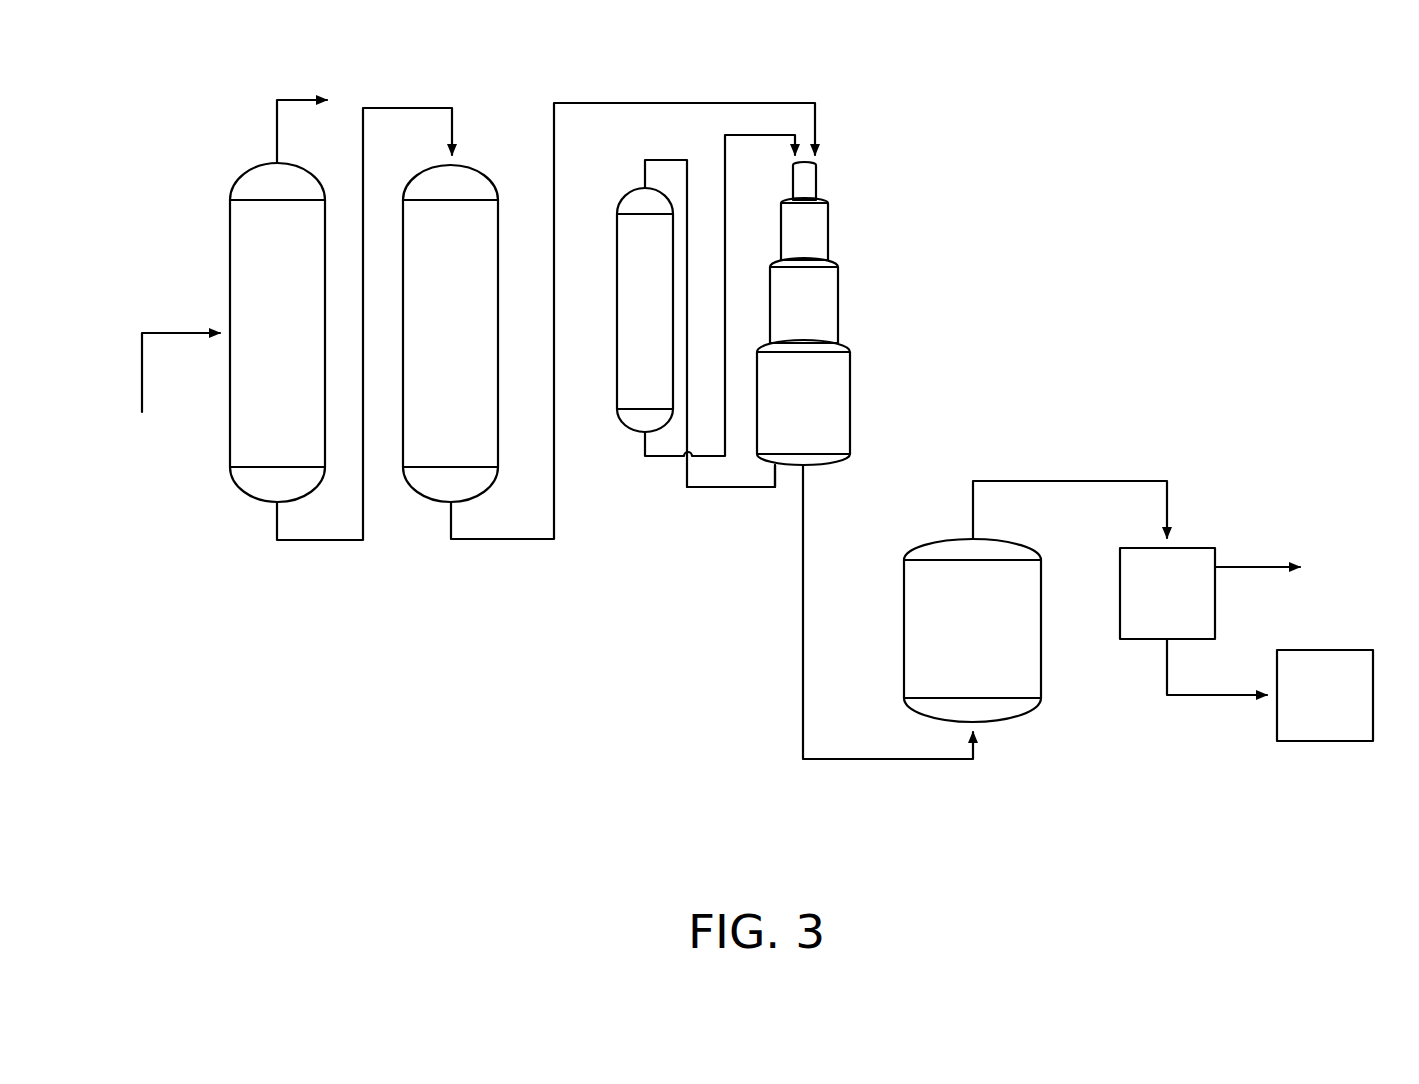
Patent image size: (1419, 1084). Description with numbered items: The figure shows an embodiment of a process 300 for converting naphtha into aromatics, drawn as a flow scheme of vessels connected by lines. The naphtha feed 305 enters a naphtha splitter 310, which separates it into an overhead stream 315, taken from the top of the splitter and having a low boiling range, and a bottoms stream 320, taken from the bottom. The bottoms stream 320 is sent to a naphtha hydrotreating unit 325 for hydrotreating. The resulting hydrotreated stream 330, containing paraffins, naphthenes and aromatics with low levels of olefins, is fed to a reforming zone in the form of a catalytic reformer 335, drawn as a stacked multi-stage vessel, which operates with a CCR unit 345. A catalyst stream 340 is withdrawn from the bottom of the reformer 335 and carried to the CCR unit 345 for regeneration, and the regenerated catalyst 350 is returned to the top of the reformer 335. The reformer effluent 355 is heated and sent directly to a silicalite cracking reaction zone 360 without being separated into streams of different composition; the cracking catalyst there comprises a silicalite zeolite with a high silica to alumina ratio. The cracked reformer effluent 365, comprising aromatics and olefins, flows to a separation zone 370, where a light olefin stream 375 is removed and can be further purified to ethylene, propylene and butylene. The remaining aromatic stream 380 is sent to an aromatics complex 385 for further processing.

The process 300 is at (168, 88).
The naphtha feed 305 is at (168, 333).
The naphtha splitter 310 is at (230, 240).
The overhead stream 315 is at (277, 132).
The bottoms stream 320 is at (276, 530).
The naphtha hydrotreating unit 325 is at (465, 163).
The hydrotreated stream 330 is at (451, 530).
The catalytic reformer 335 is at (822, 200).
The catalyst stream 340 is at (733, 489).
The CCR unit 345 is at (640, 183).
The regenerated catalyst 350 is at (660, 458).
The reformer effluent 355 is at (806, 503).
The silicalite cracking reaction zone 360 is at (1015, 539).
The cracked reformer effluent 365 is at (1073, 481).
The separation zone 370 is at (1200, 547).
The light olefin stream 375 is at (1265, 568).
The aromatic stream 380 is at (1167, 686).
The aromatics complex 385 is at (1345, 650).